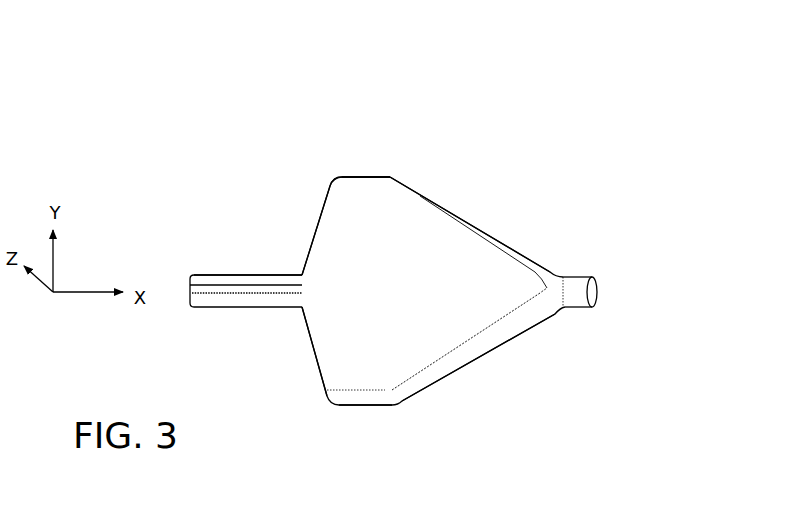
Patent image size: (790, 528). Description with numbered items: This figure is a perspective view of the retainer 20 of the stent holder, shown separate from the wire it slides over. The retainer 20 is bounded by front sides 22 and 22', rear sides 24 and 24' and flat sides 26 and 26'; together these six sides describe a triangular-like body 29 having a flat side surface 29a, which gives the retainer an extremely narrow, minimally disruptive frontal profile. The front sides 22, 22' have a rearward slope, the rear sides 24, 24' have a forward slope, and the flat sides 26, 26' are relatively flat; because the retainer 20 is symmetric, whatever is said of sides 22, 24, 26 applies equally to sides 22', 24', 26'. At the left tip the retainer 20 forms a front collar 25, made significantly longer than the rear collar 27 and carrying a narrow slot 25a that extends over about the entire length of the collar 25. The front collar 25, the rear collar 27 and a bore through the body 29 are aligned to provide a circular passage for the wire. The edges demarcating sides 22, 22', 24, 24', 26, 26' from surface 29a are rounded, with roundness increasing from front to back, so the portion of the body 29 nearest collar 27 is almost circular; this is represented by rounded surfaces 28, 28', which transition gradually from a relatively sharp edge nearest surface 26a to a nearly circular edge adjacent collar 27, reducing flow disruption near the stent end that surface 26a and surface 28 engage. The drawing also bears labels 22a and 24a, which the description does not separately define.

The retainer 20 is at (566, 59).
The front side 22 is at (292, 291).
The upper inlet wall 22a is at (318, 213).
The front side 22' is at (269, 381).
The rear side 24 is at (515, 261).
The upper outer cone wall 24a is at (488, 233).
The rear side 24' is at (478, 390).
The front collar 25 is at (213, 307).
The narrow slot 25a is at (215, 284).
The flat side 26 is at (342, 108).
The surface 26a is at (363, 177).
The flat side 26' is at (365, 448).
The rear collar 27 is at (578, 303).
The rounded surface 28 is at (491, 242).
The rounded surface 28' is at (476, 356).
The triangular-like body 29 is at (438, 181).
The flat side surface 29a is at (377, 298).